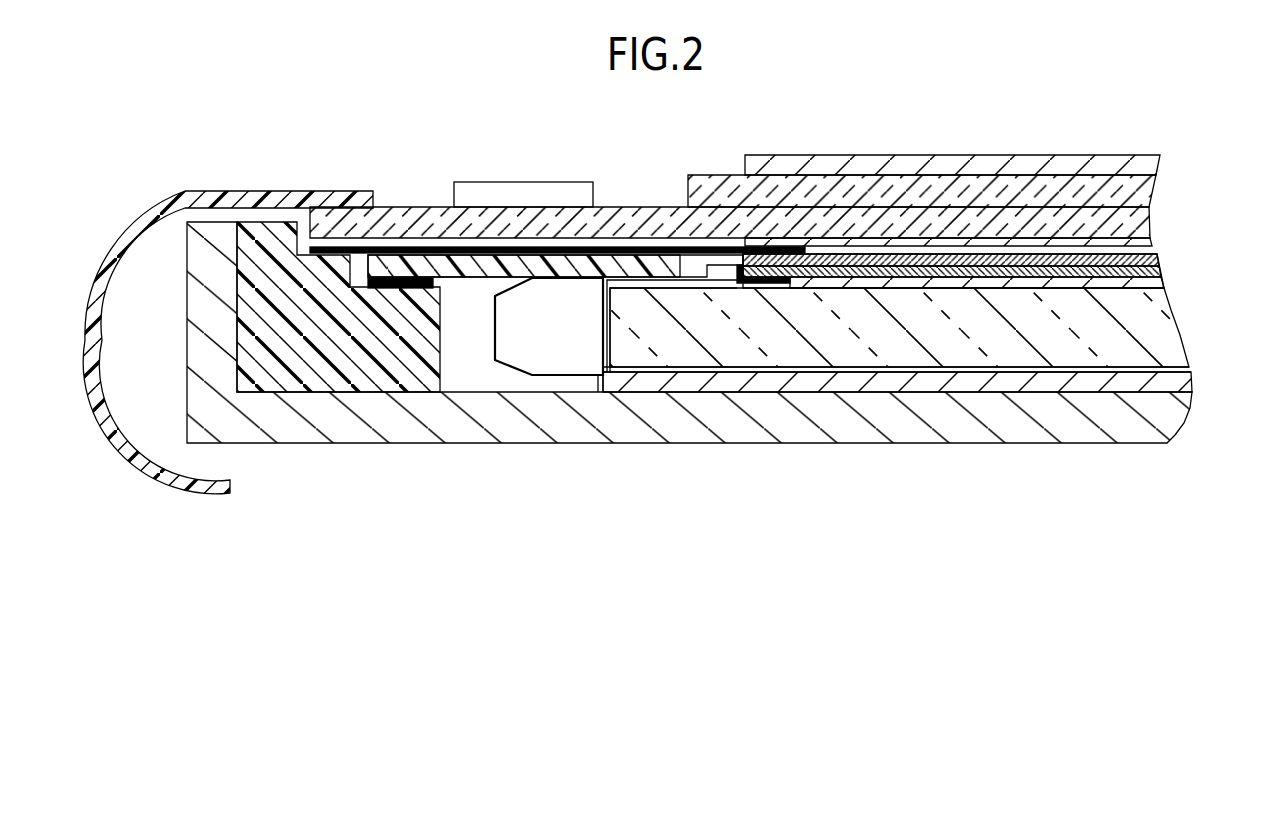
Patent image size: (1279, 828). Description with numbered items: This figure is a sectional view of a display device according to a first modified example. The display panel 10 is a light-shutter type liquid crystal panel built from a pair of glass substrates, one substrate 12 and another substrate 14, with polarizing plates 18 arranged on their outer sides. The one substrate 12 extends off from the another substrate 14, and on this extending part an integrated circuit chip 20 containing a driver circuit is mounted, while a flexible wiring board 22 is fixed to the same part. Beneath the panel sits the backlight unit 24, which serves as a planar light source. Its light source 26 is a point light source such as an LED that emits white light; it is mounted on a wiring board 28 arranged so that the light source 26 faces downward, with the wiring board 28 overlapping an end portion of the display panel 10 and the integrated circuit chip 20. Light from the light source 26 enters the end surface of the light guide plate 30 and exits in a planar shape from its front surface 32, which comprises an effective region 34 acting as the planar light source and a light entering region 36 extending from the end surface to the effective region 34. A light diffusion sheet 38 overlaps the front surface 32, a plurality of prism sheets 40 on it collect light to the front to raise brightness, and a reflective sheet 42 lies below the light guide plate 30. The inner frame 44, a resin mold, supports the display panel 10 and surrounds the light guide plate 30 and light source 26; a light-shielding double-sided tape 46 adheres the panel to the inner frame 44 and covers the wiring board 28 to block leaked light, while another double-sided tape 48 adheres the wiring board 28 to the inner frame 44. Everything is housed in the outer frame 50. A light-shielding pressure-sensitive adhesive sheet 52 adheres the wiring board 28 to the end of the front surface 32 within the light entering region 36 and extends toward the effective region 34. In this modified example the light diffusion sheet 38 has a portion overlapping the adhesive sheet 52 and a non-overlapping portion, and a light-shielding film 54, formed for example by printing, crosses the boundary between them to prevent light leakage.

The display panel 10 is at (791, 187).
The one substrate 12 is at (767, 212).
The another substrate 14 is at (956, 182).
The polarizing plate 18 is at (984, 187).
The integrated circuit chip 20 is at (523, 164).
The flexible wiring board 22 is at (228, 311).
The backlight unit 24 is at (934, 320).
The light source 26 is at (549, 392).
The wiring board 28 is at (555, 381).
The light guide plate 30 is at (899, 397).
The front surface 32 is at (953, 191).
The effective region 34 is at (897, 420).
The light entering region 36 is at (700, 419).
The light diffusion sheet 38 is at (977, 392).
The prism sheet 40 is at (952, 186).
The reflective sheet 42 is at (897, 439).
The inner frame 44 is at (338, 364).
The double-sided tape 46 is at (557, 191).
The double-sided tape 48 is at (402, 392).
The outer frame 50 is at (689, 364).
The light-shielding pressure-sensitive adhesive sheet 52 is at (672, 393).
The light-shielding film 54 is at (763, 386).